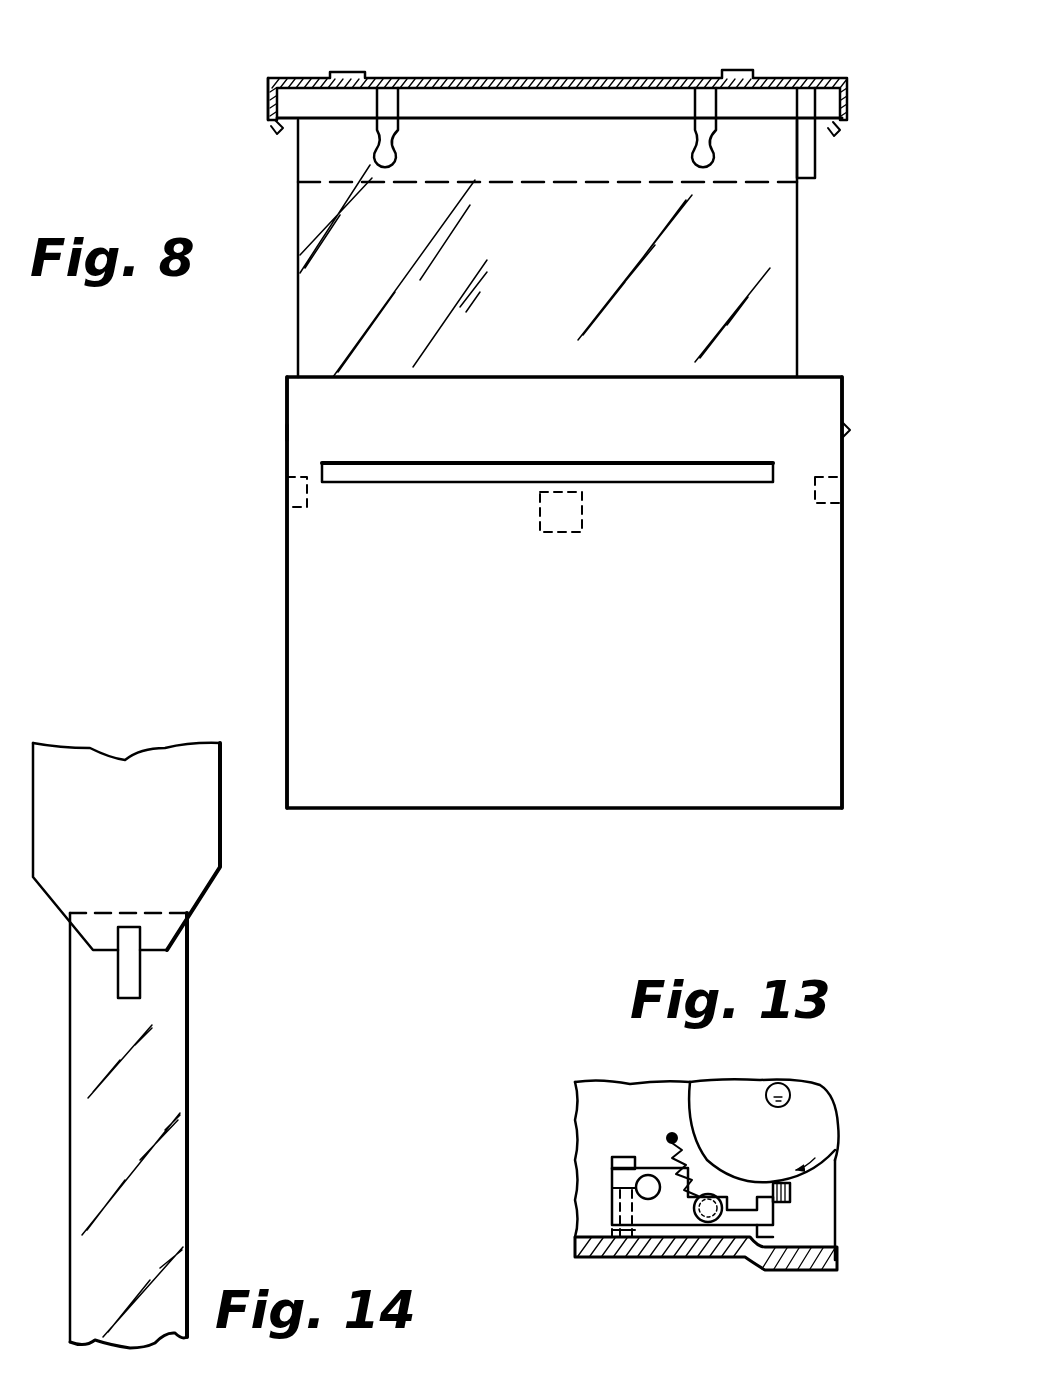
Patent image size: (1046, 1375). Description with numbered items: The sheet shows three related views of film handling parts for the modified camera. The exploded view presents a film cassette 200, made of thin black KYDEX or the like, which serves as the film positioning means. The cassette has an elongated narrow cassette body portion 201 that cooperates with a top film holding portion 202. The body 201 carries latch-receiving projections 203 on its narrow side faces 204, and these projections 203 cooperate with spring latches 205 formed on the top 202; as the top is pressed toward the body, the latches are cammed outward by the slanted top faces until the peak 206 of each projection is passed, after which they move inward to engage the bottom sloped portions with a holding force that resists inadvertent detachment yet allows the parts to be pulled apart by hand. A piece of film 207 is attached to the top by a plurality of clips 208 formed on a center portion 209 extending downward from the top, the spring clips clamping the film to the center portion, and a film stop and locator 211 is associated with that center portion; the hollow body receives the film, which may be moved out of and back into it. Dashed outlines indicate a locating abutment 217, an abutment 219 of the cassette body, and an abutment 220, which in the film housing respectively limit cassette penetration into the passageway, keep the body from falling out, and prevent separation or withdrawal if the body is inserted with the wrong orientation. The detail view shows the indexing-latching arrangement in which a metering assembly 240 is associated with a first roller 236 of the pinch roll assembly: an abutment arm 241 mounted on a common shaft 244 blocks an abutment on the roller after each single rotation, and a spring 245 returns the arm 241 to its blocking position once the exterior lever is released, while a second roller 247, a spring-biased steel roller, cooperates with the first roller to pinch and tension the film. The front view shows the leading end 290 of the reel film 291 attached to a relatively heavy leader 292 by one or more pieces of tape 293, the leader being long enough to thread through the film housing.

In FIG. 8, the film cassette 200 is at (210, 362).
In FIG. 8, the cassette body portion 201 is at (310, 545).
In FIG. 8, the top film holding portion 202 is at (268, 74).
In FIG. 8, the latch-receiving projections 203 is at (852, 415).
In FIG. 8, the narrow side faces 204 is at (287, 634).
In FIG. 8, the spring latches 205 is at (272, 130).
In FIG. 8, the peak 206 is at (283, 432).
In FIG. 8, the film 207 is at (328, 316).
In FIG. 8, the clips 208 is at (396, 150).
In FIG. 8, the center portion 209 is at (320, 95).
In FIG. 8, the film stop and locator 211 is at (808, 150).
In FIG. 8, the locating abutment 217 is at (285, 500).
In FIG. 8, the abutment 219 is at (625, 470).
In FIG. 8, the abutment 220 is at (565, 532).
In FIG. 13, the first roller 236 is at (823, 1110).
In FIG. 13, the metering assembly 240 is at (672, 1265).
In FIG. 13, the abutment arm 241 is at (742, 1262).
In FIG. 13, the common shaft 244 is at (648, 1175).
In FIG. 13, the spring 245 is at (707, 1160).
In FIG. 13, the second roller 247 is at (792, 1192).
In FIG. 14, the leading end 290 is at (208, 905).
In FIG. 14, the reel film 291 is at (210, 838).
In FIG. 14, the leader 292 is at (148, 1134).
In FIG. 14, the tape 293 is at (130, 975).